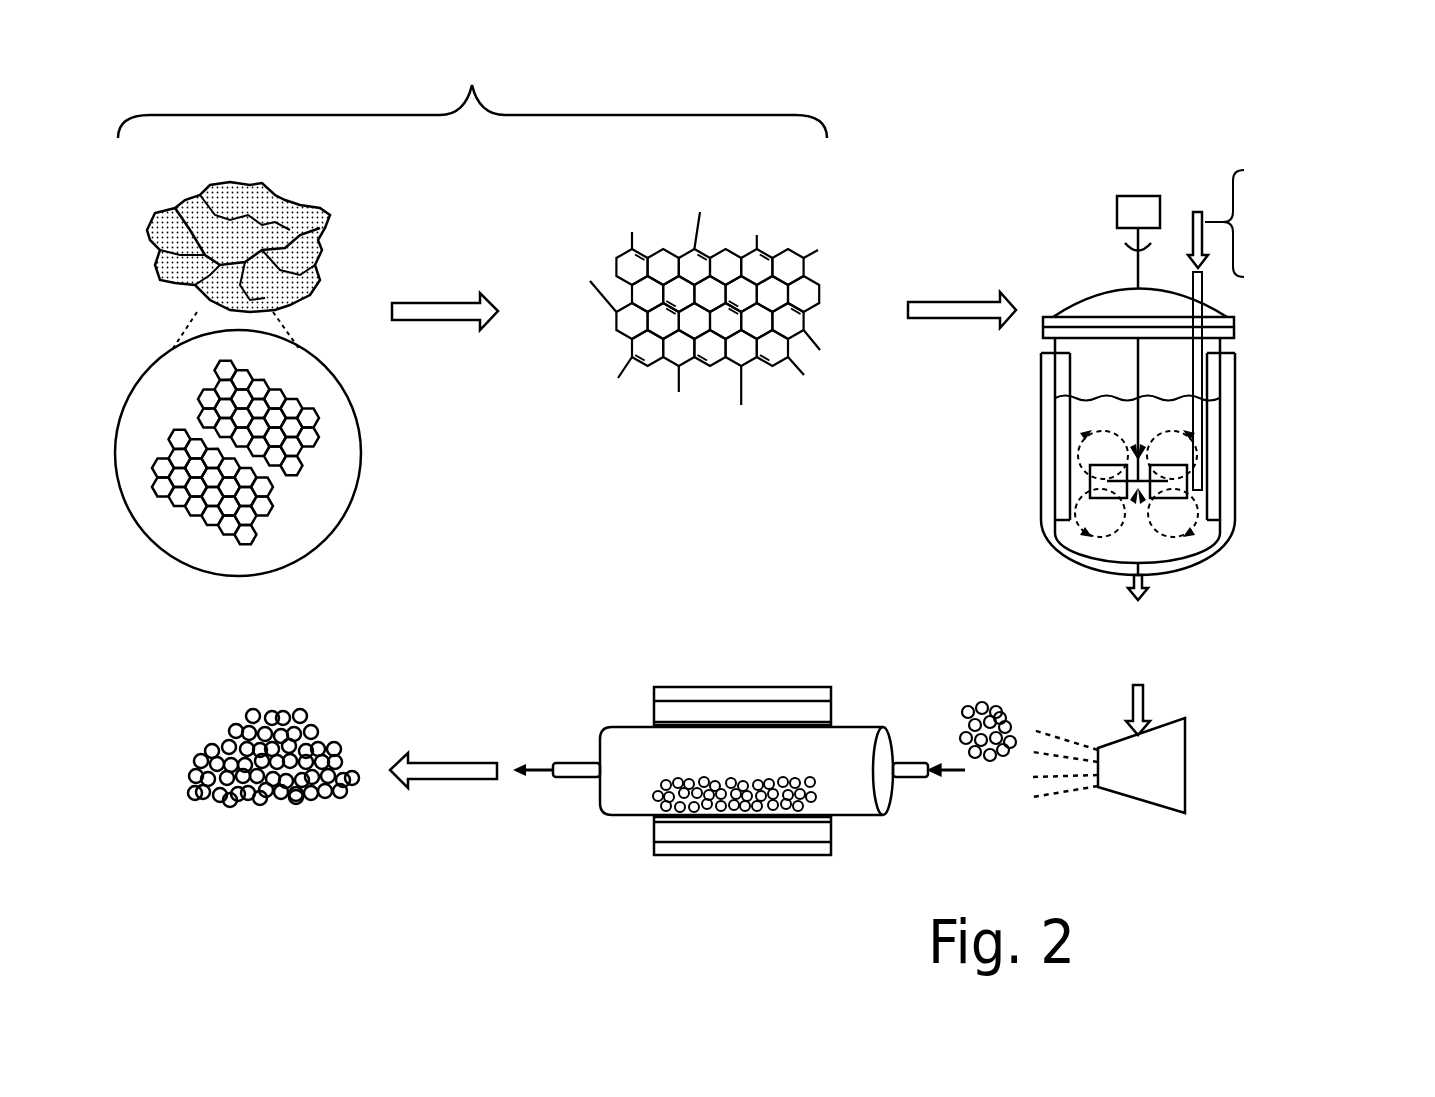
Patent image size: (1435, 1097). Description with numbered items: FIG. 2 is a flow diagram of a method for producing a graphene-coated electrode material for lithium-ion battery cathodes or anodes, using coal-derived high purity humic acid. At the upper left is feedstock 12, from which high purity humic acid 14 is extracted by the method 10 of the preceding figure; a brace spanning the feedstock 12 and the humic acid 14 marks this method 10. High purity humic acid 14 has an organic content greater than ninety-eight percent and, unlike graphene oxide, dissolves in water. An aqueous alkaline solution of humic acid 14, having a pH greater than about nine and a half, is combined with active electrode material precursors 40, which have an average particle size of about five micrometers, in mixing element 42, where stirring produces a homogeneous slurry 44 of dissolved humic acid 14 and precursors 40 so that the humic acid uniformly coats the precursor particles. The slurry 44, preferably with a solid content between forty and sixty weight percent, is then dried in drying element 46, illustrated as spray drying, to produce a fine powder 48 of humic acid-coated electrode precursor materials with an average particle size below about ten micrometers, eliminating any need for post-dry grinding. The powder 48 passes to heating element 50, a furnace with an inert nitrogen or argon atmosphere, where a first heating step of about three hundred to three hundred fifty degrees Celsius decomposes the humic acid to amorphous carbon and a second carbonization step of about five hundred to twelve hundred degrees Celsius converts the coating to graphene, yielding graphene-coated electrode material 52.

The method 10 is at (472, 95).
The feedstock 12 is at (230, 400).
The high purity humic acid 14 is at (740, 452).
The active electrode material precursors 40 is at (1310, 229).
The mixing element 42 is at (1222, 461).
The slurry 44 is at (1137, 617).
The drying element 46 is at (1128, 781).
The powder 48 is at (988, 762).
The heating element 50 is at (727, 857).
The graphene-coated electrode material 52 is at (260, 808).